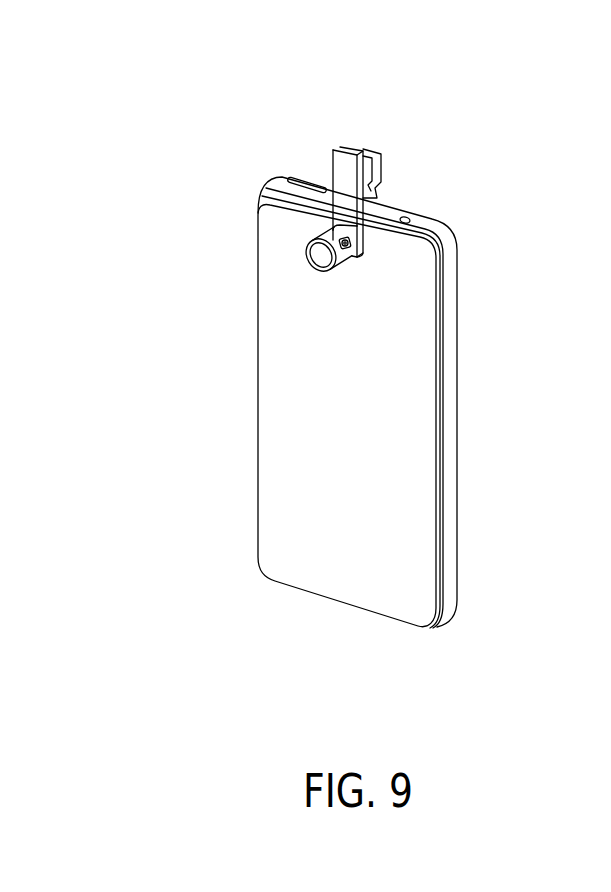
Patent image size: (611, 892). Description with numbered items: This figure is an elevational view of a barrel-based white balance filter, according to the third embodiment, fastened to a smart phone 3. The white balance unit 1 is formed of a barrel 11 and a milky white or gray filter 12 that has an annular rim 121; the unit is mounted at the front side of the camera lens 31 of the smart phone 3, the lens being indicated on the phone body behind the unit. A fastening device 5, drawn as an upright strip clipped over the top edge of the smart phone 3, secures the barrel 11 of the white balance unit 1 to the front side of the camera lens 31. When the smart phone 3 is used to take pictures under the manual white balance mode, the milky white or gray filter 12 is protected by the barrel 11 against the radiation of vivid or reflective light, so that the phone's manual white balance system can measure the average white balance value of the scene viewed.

The white balance unit 1 is at (339, 213).
The barrel 11 is at (332, 231).
The milky white or gray filter 12 is at (318, 256).
The annular rim 121 is at (345, 243).
The smart phone 3 is at (417, 297).
The camera lens 31 is at (350, 240).
The fastening device 5 is at (347, 168).